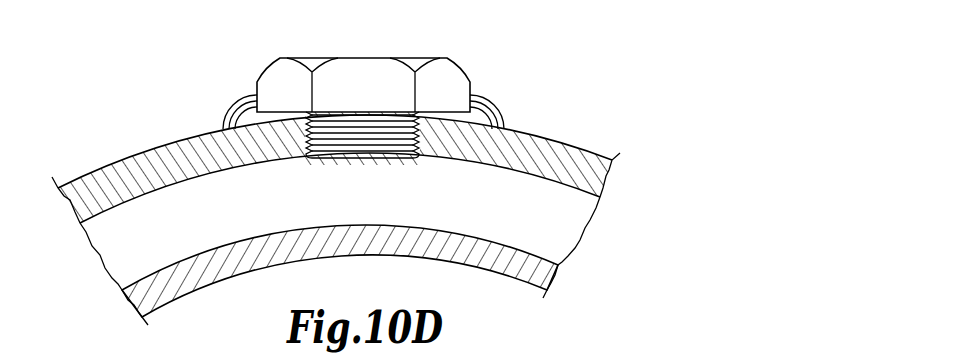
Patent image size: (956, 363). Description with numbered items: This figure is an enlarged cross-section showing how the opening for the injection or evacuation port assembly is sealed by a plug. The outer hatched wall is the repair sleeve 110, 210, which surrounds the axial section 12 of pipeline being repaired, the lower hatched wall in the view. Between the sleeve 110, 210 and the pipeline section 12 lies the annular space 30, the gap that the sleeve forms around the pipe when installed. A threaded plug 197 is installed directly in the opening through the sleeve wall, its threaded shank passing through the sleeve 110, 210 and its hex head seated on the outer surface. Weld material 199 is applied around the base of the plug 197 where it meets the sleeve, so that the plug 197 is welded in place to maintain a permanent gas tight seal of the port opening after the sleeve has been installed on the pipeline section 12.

The sleeve 110 is at (543, 145).
The bolt-on sleeve unit 210 is at (340, 212).
The annular space 30 is at (257, 213).
The axial section of pipeline 12 is at (467, 265).
The plug 197 is at (378, 68).
The weld material 199 is at (237, 112).